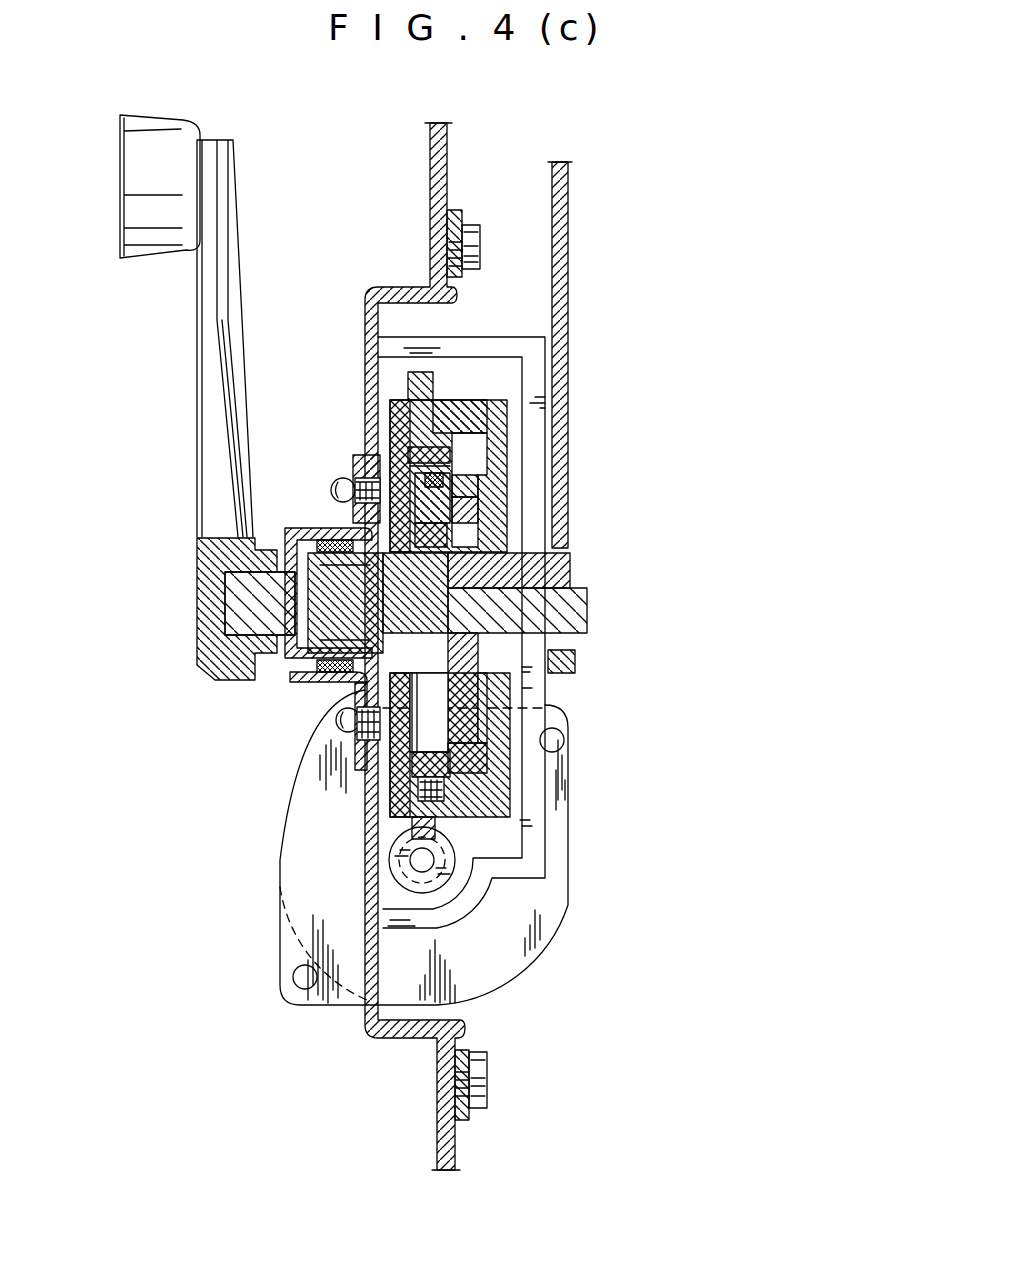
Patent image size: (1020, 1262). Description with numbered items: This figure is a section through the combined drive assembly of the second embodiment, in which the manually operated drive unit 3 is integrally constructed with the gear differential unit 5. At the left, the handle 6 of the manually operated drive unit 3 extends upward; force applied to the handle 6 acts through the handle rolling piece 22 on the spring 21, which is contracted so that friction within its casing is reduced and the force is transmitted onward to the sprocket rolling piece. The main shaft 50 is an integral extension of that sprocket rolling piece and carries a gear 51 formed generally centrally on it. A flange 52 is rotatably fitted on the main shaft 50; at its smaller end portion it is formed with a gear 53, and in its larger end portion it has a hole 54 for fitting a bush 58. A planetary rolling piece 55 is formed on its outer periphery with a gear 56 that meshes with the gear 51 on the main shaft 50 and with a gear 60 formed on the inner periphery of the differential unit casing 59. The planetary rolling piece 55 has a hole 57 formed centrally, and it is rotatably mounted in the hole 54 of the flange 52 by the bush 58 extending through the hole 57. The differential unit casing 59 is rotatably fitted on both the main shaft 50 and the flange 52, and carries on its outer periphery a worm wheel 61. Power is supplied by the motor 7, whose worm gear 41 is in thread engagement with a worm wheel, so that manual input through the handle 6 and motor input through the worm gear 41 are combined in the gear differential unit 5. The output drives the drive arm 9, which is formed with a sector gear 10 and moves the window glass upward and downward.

The manually operated drive unit 3 is at (612, 597).
The gear differential unit 5 is at (552, 695).
The handle 6 is at (205, 378).
The motor 7 is at (300, 832).
The drive arm 9 is at (566, 230).
The sector gear 10 is at (566, 540).
The spring 21 is at (296, 682).
The handle rolling piece 22 is at (287, 532).
The worm gear 41 is at (440, 880).
The main shaft 50 is at (575, 613).
The gear 51 is at (410, 688).
The flange 52 is at (547, 682).
The gear 53 is at (565, 658).
The hole 54 is at (462, 478).
The planetary rolling piece 55 is at (418, 456).
The gear 56 is at (450, 448).
The hole 57 is at (400, 482).
The bush 58 is at (462, 500).
The differential unit casing 59 is at (500, 800).
The gear 60 is at (455, 757).
The worm wheel 61 is at (413, 383).